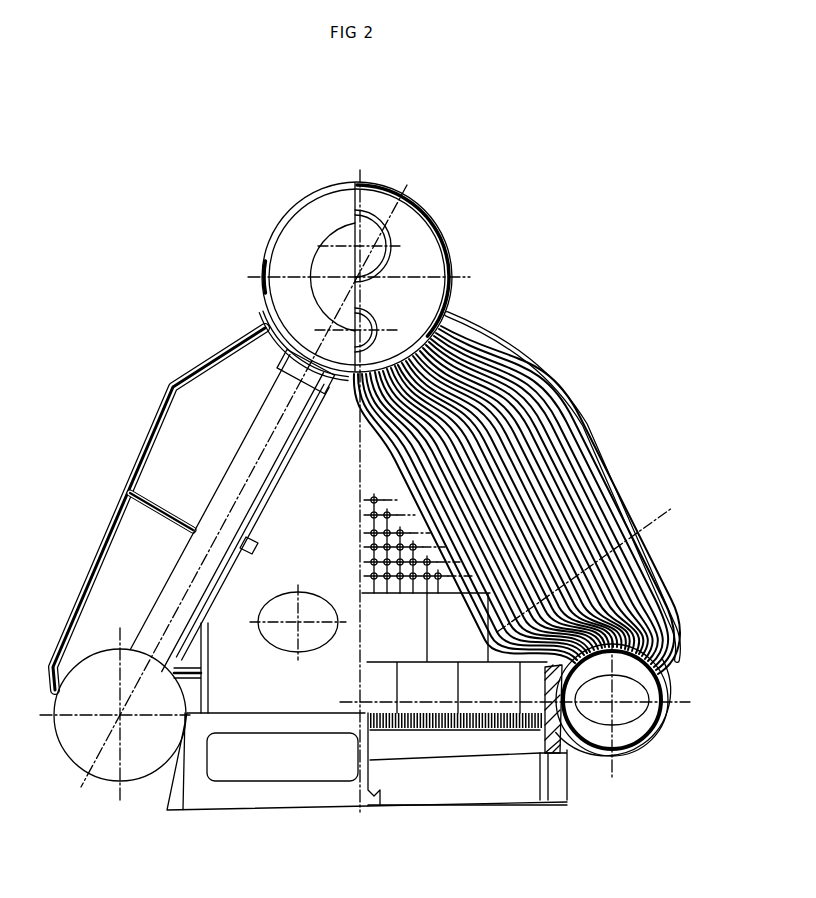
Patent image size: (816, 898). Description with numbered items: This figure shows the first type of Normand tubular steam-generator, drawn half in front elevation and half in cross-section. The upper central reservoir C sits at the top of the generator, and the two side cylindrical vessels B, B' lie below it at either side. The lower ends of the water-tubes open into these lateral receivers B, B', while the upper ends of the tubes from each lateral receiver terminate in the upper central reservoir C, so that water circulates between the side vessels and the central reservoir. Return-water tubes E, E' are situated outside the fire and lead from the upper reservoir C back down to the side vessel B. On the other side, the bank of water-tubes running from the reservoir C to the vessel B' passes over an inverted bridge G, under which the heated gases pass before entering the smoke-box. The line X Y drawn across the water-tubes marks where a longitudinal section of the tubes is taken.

The upper central reservoir C is at (359, 281).
The side cylindrical vessel B is at (124, 711).
The side cylindrical vessel B' is at (613, 710).
The return-water tube E is at (233, 511).
The return-water tube E' is at (252, 522).
The inverted bridge G is at (420, 510).
The section line point X is at (507, 625).
The section line point Y is at (672, 508).